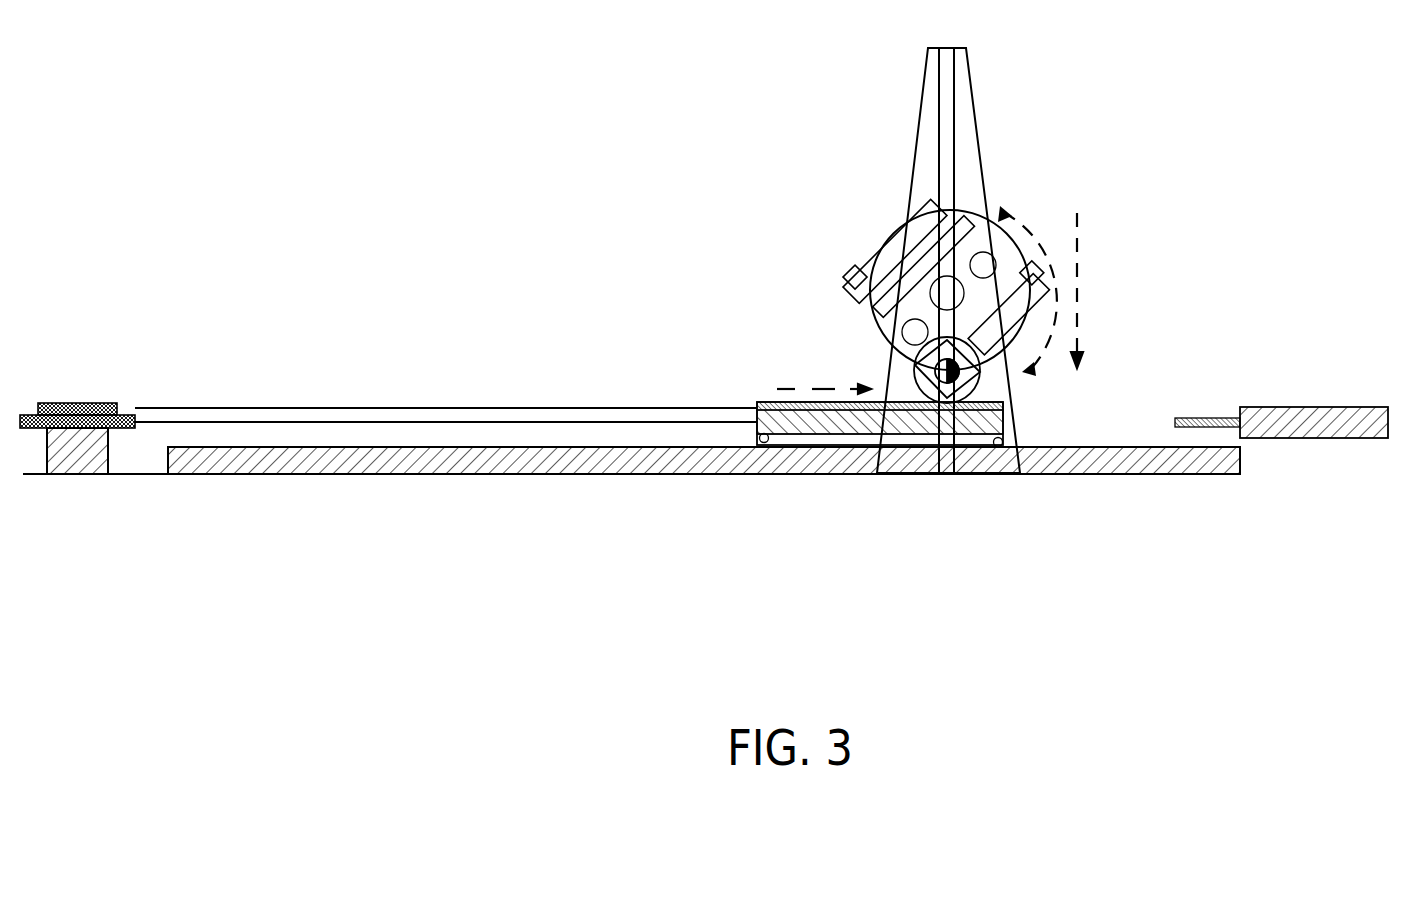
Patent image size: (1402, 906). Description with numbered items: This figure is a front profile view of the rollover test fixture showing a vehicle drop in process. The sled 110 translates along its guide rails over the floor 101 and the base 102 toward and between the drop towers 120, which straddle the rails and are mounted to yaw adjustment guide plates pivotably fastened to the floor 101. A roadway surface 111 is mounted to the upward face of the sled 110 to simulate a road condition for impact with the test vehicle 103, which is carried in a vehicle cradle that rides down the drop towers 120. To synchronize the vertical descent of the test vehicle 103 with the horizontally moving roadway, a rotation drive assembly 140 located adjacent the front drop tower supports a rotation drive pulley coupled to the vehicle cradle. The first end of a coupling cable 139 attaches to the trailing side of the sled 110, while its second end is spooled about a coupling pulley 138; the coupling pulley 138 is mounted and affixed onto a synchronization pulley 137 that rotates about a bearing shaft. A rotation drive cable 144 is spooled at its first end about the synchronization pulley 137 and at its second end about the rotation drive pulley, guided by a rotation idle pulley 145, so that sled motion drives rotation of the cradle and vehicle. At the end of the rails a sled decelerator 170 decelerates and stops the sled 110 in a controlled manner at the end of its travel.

The floor 101 is at (123, 474).
The base plate 102 is at (280, 475).
The test vehicle 103 is at (857, 270).
The sled 110 is at (783, 437).
The roadway surface 111 is at (760, 400).
The drop towers 120 is at (977, 120).
The synchronization pulley 137 is at (30, 412).
The coupling pulley 138 is at (97, 402).
The coupling cable 139 is at (448, 422).
The rotation drive assembly 140 is at (890, 238).
The rotation drive cable 144 is at (315, 408).
The rotation idle pulley 145 is at (990, 440).
The sled decelerator 170 is at (1255, 393).